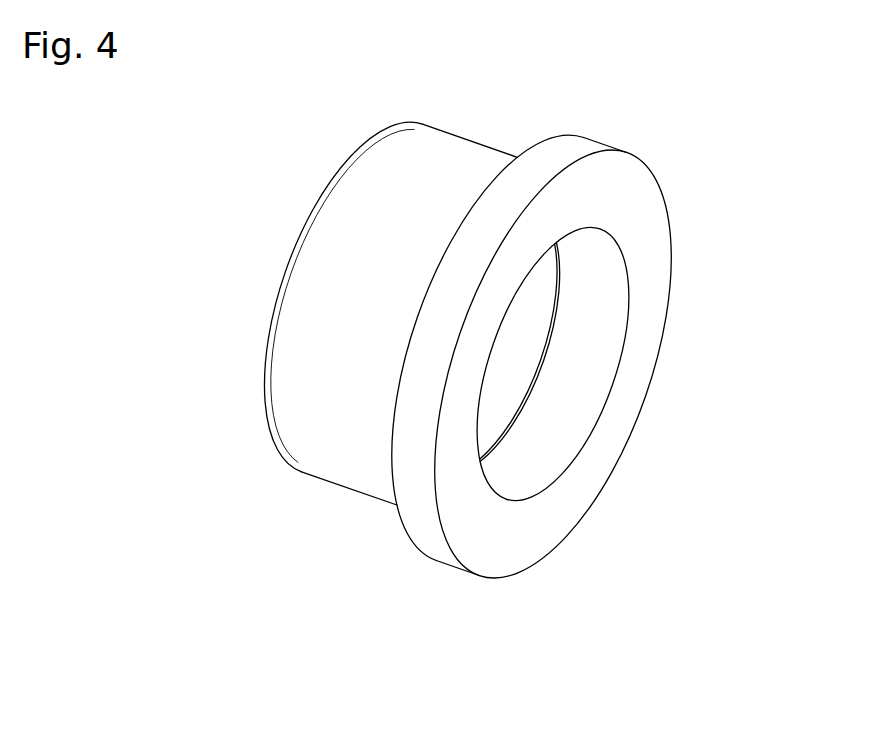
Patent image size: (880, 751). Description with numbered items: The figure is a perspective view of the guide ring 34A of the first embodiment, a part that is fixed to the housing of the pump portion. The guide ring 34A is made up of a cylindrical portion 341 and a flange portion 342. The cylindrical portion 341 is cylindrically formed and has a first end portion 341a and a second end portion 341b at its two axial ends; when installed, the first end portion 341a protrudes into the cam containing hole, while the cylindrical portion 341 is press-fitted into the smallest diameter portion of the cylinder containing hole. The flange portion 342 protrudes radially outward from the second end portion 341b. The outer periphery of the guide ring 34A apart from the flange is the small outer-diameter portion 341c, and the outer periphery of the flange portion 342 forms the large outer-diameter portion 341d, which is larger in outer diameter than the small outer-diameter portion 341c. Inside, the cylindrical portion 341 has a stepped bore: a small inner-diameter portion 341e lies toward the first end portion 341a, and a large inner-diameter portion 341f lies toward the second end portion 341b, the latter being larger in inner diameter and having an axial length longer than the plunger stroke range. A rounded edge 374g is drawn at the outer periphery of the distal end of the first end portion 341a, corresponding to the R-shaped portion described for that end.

The guide ring 34A is at (461, 362).
The cylindrical portion 341 is at (336, 327).
The first end portion 341a is at (273, 308).
The second end portion 341b is at (598, 463).
The small outer-diameter portion 341c is at (319, 453).
The large outer-diameter portion 341d is at (423, 533).
The small inner-diameter portion 341e is at (530, 323).
The large inner-diameter portion 341f is at (607, 364).
The flange portion 342 is at (570, 380).
The chamfer 374g is at (303, 225).